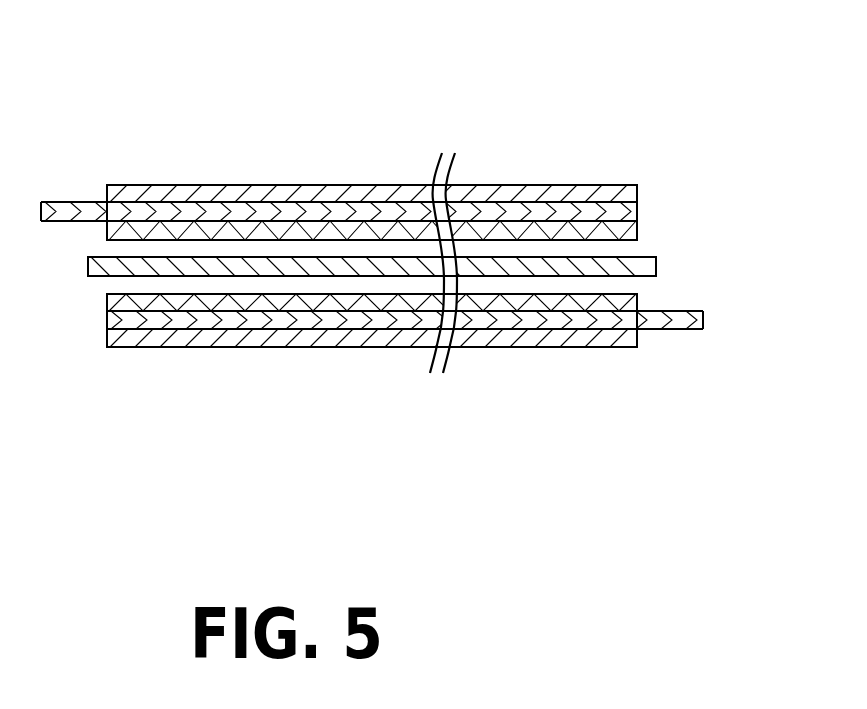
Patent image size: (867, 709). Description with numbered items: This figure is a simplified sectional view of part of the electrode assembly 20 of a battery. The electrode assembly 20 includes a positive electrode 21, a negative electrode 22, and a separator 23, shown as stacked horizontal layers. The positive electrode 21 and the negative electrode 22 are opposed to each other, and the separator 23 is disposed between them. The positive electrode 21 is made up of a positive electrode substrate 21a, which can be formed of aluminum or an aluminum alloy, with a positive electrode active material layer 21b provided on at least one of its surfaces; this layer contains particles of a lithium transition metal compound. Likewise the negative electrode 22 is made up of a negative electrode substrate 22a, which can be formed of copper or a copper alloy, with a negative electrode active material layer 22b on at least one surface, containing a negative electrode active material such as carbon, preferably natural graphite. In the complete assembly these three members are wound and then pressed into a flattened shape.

The electrode assembly 20 is at (411, 244).
The positive electrode 21 is at (339, 143).
The positive electrode substrate 21a is at (63, 202).
The positive electrode active material layer 21b is at (158, 185).
The negative electrode 22 is at (416, 389).
The negative electrode substrate 22a is at (677, 330).
The negative electrode active material layer 22b is at (587, 347).
The separator 23 is at (657, 267).